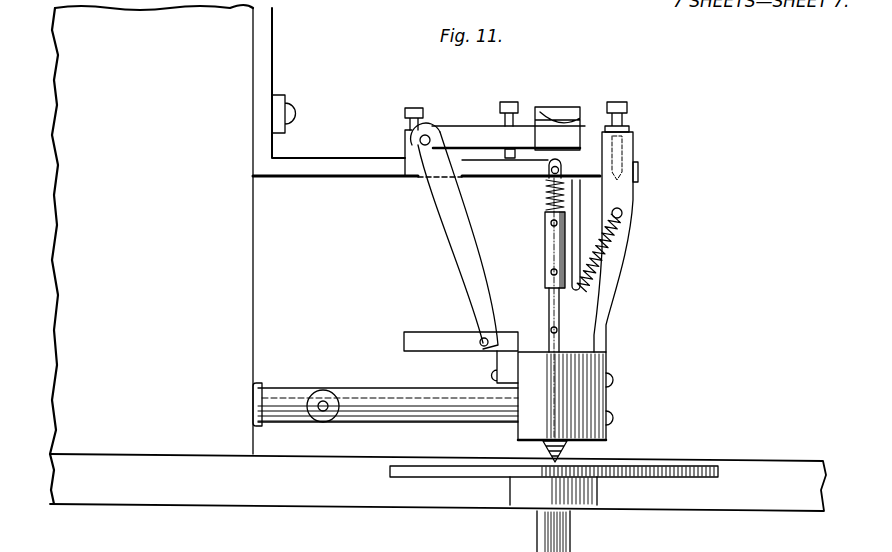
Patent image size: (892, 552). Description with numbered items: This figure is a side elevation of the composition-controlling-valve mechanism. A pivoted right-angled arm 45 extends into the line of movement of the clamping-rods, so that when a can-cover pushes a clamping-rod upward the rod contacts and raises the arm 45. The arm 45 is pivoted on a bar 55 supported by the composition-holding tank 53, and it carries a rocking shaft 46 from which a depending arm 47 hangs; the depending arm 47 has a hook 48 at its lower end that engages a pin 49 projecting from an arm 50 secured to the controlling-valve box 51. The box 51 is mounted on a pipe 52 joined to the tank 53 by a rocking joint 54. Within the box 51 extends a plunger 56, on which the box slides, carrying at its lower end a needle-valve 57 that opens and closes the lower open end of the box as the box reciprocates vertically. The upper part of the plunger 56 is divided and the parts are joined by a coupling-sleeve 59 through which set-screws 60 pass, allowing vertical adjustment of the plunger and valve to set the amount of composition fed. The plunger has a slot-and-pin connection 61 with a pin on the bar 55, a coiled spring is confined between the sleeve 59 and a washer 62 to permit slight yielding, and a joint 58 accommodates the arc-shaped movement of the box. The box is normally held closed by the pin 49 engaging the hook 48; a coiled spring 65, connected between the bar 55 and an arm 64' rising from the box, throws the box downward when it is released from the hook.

The pivoted right-angled arm 45 is at (468, 121).
The rocking shaft 46 is at (419, 141).
The depending arm 47 is at (460, 243).
The hook 48 is at (492, 366).
The pin 49 is at (480, 338).
The arm 50 is at (404, 342).
The controlling-valve box 51 is at (565, 396).
The pipe 52 is at (407, 395).
The composition-holding tank 53 is at (227, 254).
The rocking joint 54 is at (324, 392).
The bar 55 is at (372, 172).
The plunger 56 is at (549, 301).
The needle-valve 57 is at (550, 458).
The joint 58 is at (551, 329).
The coupling-sleeve 59 is at (545, 246).
The set-screws 60 is at (551, 223).
The slot-and-pin connection 61 is at (548, 174).
The washer 62 is at (545, 188).
The arm 64' is at (637, 227).
The coiled spring 65 is at (598, 257).